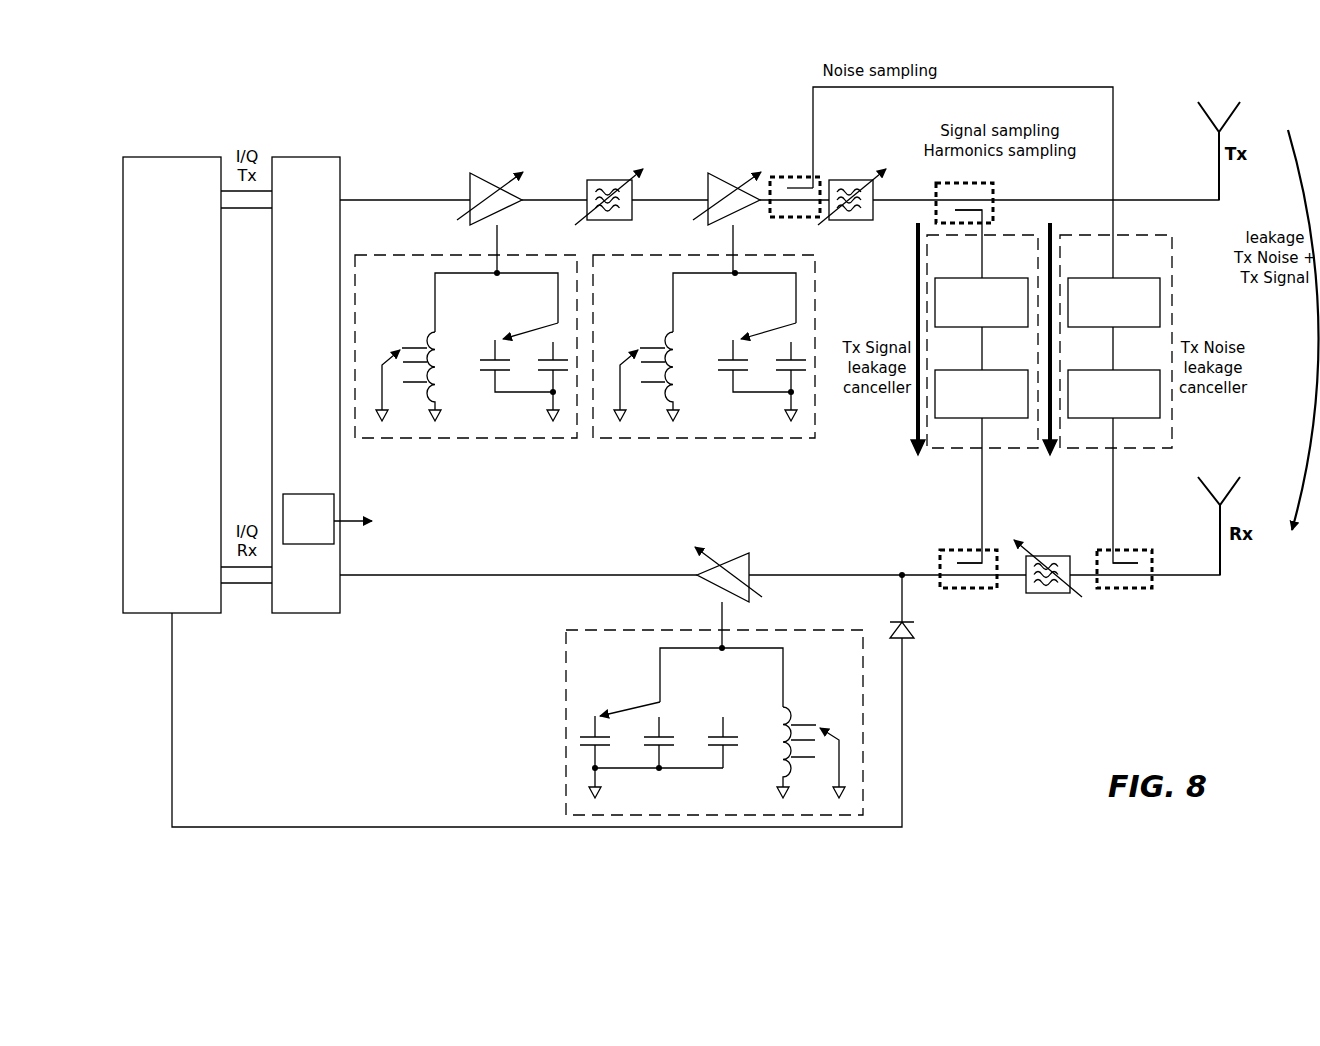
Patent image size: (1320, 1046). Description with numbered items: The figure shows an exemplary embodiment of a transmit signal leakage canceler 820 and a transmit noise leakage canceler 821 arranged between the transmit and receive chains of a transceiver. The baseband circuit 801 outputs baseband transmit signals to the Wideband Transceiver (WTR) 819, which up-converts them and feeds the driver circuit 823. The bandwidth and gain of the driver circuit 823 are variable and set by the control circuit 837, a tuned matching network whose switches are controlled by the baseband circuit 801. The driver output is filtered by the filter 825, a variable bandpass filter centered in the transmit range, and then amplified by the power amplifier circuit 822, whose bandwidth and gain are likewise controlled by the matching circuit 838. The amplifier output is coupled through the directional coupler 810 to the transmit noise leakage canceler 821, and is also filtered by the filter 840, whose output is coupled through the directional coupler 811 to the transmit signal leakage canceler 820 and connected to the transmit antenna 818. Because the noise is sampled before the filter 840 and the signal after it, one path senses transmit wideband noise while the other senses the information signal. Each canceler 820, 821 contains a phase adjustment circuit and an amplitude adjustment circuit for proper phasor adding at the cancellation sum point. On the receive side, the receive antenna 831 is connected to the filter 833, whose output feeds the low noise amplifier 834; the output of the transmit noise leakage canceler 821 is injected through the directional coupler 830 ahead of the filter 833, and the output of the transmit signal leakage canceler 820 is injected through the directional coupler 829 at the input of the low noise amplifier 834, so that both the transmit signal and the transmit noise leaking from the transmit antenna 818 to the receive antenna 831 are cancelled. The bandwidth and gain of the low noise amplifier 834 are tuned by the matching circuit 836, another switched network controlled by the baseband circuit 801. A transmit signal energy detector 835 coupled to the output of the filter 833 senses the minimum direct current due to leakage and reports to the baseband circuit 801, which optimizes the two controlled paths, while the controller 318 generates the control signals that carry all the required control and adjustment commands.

The baseband circuit 801 is at (165, 157).
The Wideband Transceiver (WTR) 819 is at (298, 157).
The controller 318 is at (336, 503).
The driver circuit 823 is at (498, 213).
The filter 825 is at (600, 222).
The power amplifier circuit 822 is at (718, 220).
The directional coupler 810 is at (806, 220).
The filter (BPF) 840 is at (837, 222).
The directional coupler 811 is at (993, 183).
The transmit antenna 818 is at (1238, 108).
The transmit signal leakage canceler 820 is at (1000, 450).
The transmit noise leakage canceler 821 is at (1133, 450).
The control circuit (matching circuit) 837 is at (500, 440).
The matching circuit 838 is at (738, 440).
The directional coupler 829 is at (962, 550).
The filter (Rx BPF) 833 is at (1040, 553).
The directional coupler 830 is at (1130, 550).
The receive antenna 831 is at (1240, 483).
The low noise amplifier (LNA) 834 is at (715, 590).
The matching circuit 836 is at (607, 630).
The transmit signal energy detector 835 is at (905, 640).